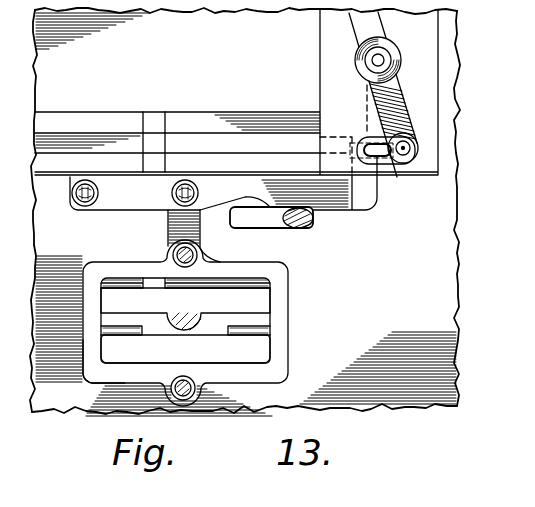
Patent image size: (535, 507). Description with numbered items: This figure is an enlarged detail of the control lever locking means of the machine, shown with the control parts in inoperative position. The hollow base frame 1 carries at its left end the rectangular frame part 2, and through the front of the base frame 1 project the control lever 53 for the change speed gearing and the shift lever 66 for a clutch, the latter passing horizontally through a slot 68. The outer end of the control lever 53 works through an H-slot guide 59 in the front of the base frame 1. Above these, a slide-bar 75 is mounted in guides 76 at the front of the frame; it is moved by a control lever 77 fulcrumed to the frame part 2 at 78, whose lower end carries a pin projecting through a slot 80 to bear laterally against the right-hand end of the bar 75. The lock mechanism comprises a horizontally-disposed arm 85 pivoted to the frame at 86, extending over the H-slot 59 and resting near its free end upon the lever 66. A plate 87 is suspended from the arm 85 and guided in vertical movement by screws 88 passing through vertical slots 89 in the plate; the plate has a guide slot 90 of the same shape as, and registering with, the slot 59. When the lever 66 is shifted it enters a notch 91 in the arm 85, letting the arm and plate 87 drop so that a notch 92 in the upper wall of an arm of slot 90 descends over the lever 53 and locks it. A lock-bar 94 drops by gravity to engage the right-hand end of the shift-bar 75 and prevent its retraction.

The base frame 1 is at (245, 213).
The frame part 2 is at (246, 91).
The control lever 53 is at (185, 349).
The H-slot guide 59 is at (302, 342).
The shift lever 66 is at (311, 221).
The slot 68 is at (266, 222).
The slide-bar 75 is at (203, 142).
The guides 76 is at (153, 130).
The control lever 77 is at (377, 25).
The fulcrum 78 is at (386, 58).
The slot 80 is at (385, 163).
The arm 85 is at (135, 193).
The pivot 86 is at (77, 204).
The plate 87 is at (290, 297).
The screws 88 is at (177, 254).
The slots 89 is at (197, 252).
The guide slot 90 is at (100, 352).
The notch 91 is at (250, 196).
The notch 92 is at (110, 276).
The lock-bar 94 is at (367, 118).